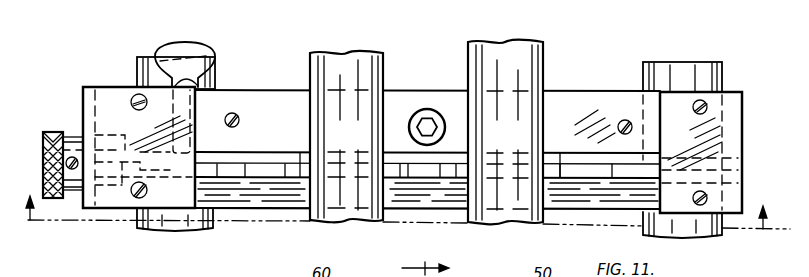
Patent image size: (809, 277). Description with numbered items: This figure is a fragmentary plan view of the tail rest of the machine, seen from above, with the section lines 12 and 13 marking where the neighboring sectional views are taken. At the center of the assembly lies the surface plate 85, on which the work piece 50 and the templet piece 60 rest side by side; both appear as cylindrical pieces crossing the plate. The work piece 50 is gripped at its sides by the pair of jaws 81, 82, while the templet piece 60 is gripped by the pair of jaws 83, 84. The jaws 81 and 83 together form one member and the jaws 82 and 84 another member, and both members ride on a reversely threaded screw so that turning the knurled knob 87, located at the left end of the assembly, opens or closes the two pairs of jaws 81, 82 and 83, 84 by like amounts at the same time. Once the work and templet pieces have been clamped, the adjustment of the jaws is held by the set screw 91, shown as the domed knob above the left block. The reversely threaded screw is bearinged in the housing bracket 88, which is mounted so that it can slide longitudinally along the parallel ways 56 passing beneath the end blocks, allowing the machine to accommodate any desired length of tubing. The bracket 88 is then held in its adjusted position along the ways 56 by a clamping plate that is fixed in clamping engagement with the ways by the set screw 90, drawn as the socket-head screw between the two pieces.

The section line 12- 12 is at (405, 236).
The section line 13- 13 is at (415, 268).
The work piece 50 is at (545, 65).
The parallel ways 56 is at (140, 63).
The templet piece 60 is at (385, 64).
The jaw 81 is at (456, 176).
The jaw 82 is at (562, 150).
The jaw 83 is at (300, 156).
The jaw 84 is at (408, 164).
The surface plate 85 is at (277, 92).
The knurled knob 87 is at (54, 133).
The housing bracket 88 is at (263, 209).
The set screw 90 is at (431, 110).
The set screw 91 is at (207, 57).